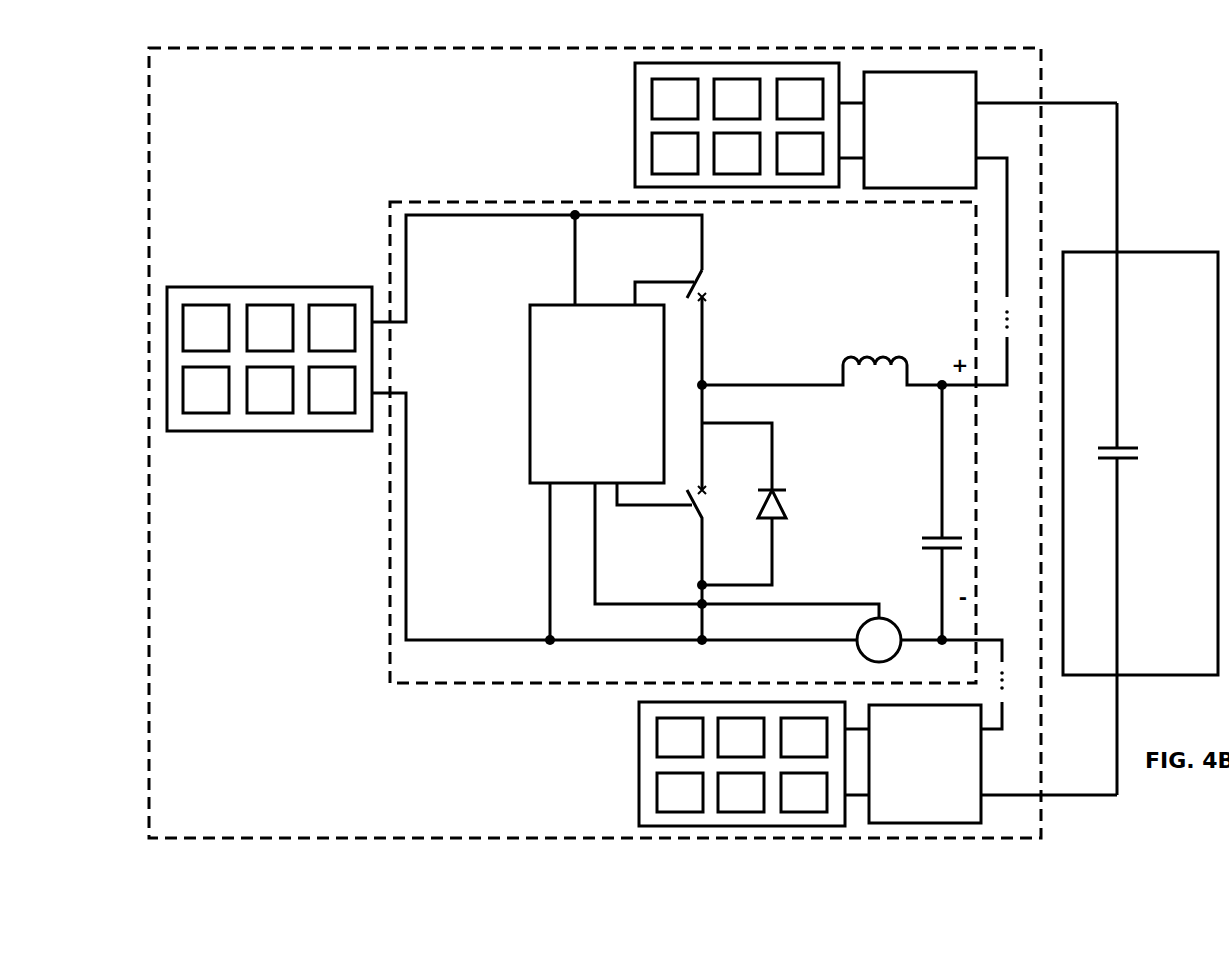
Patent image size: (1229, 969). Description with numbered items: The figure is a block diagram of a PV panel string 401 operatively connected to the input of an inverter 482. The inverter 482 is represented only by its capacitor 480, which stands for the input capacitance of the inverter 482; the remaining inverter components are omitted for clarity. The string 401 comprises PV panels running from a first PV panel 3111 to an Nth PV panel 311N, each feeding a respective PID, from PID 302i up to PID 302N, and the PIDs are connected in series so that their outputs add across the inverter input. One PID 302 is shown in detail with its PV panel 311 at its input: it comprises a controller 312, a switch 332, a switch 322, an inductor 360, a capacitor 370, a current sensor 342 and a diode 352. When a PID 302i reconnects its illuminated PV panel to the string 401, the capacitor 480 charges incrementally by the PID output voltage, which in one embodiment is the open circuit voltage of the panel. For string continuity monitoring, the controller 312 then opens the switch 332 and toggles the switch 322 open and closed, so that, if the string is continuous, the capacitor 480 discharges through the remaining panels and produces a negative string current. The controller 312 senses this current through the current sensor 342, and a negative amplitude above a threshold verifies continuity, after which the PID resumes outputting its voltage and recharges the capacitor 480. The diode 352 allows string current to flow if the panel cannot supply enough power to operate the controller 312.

The PV panel string 401 is at (292, 40).
The PID 302 is at (418, 192).
The PV panel 311 is at (238, 276).
The PV panel N 311N is at (624, 92).
The PV panel 1 3111 is at (629, 758).
The PID N 302N is at (920, 130).
The PID i 302i is at (925, 764).
The controller 312 is at (597, 394).
The switch 332 is at (713, 327).
The switch 322 is at (713, 512).
The diode 352 is at (763, 504).
The inductor 360 is at (822, 361).
The capacitor 370 is at (922, 512).
The current sensor 342 is at (895, 610).
The capacitor 480 is at (1136, 449).
The inverter 482 is at (1140, 463).